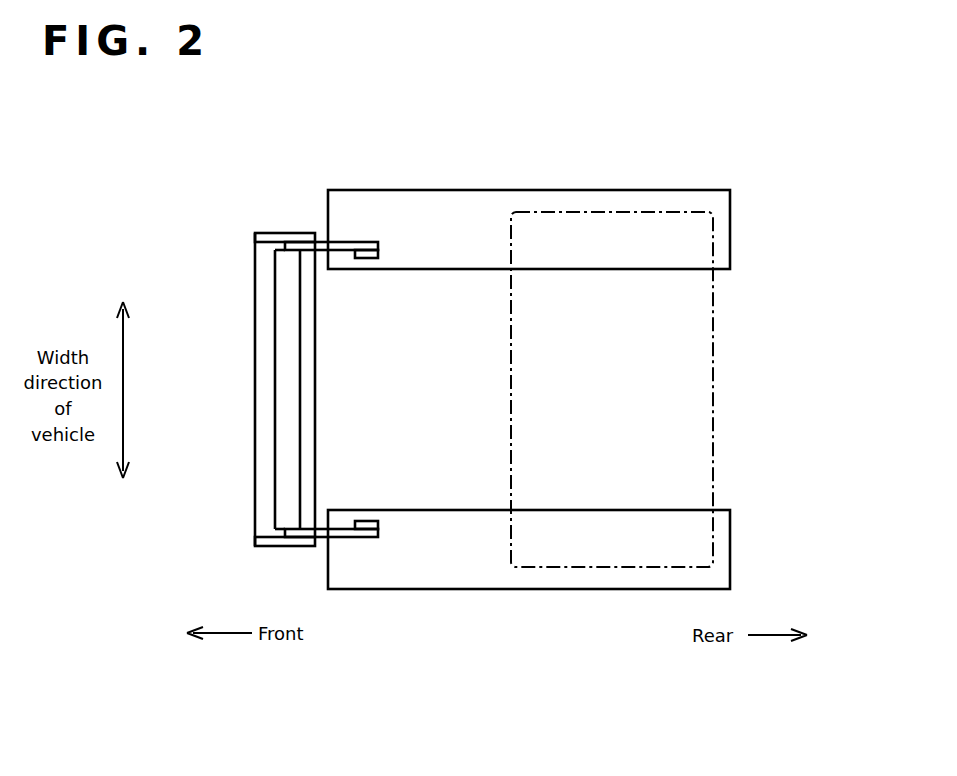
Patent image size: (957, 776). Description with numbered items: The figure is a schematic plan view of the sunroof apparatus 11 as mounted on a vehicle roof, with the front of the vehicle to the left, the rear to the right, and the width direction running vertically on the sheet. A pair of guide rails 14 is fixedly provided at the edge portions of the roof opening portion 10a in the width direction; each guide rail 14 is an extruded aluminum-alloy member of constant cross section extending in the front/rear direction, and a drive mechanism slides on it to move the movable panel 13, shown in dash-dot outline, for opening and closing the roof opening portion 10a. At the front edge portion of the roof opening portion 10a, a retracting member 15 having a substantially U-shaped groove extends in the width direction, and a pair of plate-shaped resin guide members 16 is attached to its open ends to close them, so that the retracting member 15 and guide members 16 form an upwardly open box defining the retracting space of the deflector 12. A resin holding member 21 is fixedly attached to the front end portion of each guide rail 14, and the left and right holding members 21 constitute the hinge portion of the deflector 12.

The roof opening portion 10a is at (433, 384).
The sunroof apparatus 11 is at (543, 381).
The deflector 12 is at (278, 447).
The movable panel 13 is at (713, 392).
The guide rail 14 is at (441, 190).
The retracting member 15 is at (290, 392).
The guide member 16 is at (283, 232).
The holding member 21 is at (362, 259).